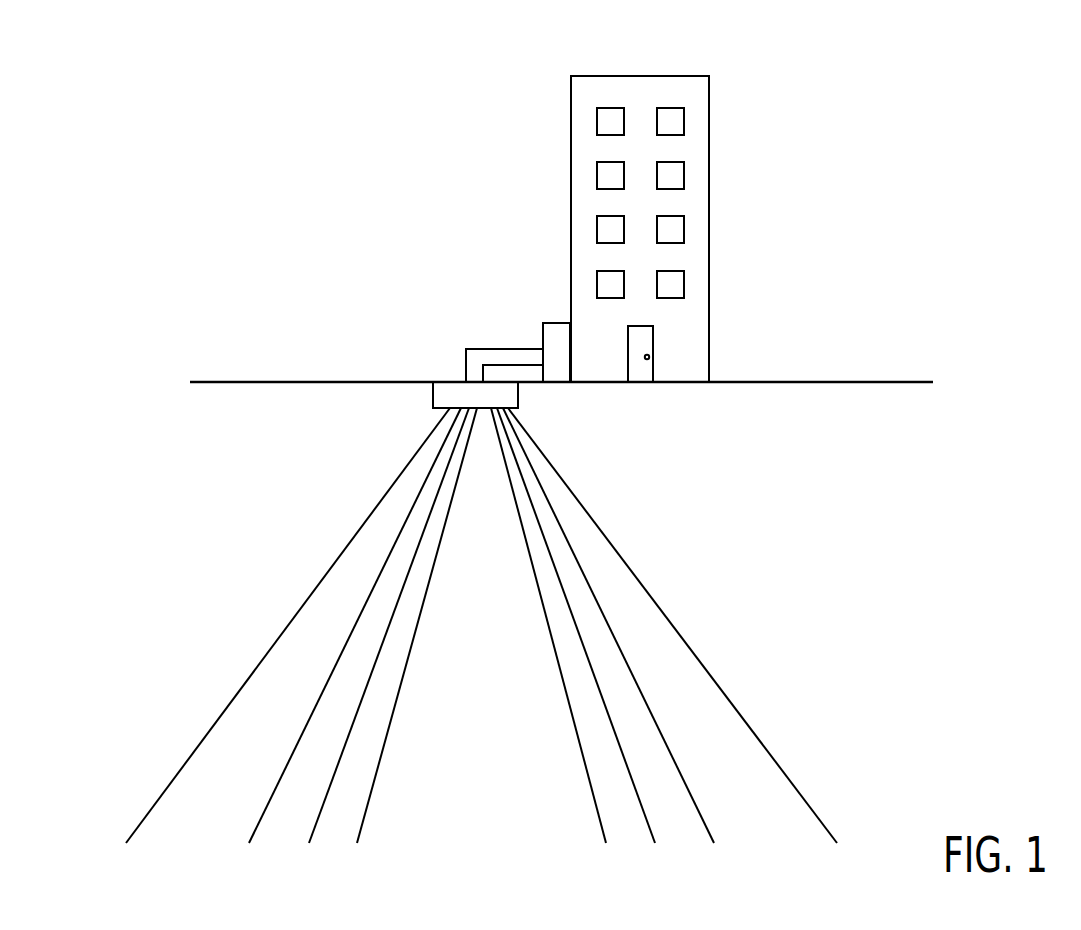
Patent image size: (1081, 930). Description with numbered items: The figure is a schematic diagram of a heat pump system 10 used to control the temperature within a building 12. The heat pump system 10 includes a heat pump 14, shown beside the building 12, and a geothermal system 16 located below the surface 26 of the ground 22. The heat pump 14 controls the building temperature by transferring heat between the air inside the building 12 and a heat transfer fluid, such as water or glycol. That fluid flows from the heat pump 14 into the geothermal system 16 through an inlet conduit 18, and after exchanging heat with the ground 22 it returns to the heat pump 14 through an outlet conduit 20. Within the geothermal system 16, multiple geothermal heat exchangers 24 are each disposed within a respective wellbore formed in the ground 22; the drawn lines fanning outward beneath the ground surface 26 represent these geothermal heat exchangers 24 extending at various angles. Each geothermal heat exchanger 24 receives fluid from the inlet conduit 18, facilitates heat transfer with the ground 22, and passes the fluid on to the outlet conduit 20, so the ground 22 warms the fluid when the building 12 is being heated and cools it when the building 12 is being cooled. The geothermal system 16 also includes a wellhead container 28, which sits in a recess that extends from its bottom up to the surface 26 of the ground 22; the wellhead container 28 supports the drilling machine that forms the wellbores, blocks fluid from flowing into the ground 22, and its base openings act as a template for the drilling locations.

The heat pump system 10 is at (472, 258).
The building 12 is at (709, 227).
The heat pump 14 is at (555, 323).
The geothermal system 16 is at (393, 447).
The inlet conduit 18 is at (506, 349).
The outlet conduit 20 is at (524, 366).
The ground 22 is at (674, 505).
The geothermal heat exchangers 24 is at (675, 625).
The surface of the ground 26 is at (312, 382).
The wellhead container 28 is at (433, 397).